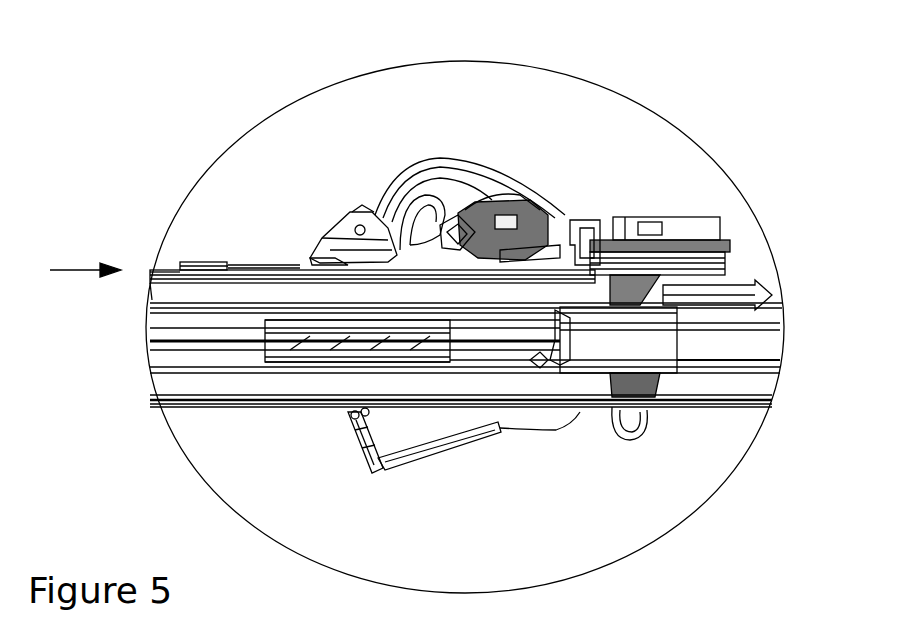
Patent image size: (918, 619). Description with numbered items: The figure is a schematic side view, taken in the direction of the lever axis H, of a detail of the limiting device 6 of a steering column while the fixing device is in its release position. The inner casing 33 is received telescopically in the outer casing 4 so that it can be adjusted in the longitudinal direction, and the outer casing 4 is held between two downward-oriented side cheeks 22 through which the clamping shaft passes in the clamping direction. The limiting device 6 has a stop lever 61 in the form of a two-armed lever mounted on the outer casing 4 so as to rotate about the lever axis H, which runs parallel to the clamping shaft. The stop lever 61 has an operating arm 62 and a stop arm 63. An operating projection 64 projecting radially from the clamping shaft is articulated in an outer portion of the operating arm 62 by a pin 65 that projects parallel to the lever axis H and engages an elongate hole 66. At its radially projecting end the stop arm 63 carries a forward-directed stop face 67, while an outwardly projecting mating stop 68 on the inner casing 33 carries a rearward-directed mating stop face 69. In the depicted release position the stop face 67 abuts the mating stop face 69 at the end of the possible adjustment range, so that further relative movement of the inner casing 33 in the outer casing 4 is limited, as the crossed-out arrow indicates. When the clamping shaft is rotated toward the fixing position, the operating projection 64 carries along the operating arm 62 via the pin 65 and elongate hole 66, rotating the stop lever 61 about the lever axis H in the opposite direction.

The outer casing 4 is at (590, 252).
The limiting device 6 is at (340, 200).
The lever axis H is at (358, 205).
The side cheeks 22 is at (535, 205).
The inner casing 33 is at (162, 286).
The stop lever 61 is at (372, 205).
The operating arm 62 is at (392, 200).
The stop arm 63 is at (333, 258).
The operating projection 64 is at (462, 205).
The pin 65 is at (456, 198).
The elongate hole 66 is at (440, 198).
The stop face 67 is at (270, 262).
The mating stop 68 is at (173, 267).
The mating stop face 69 is at (225, 265).